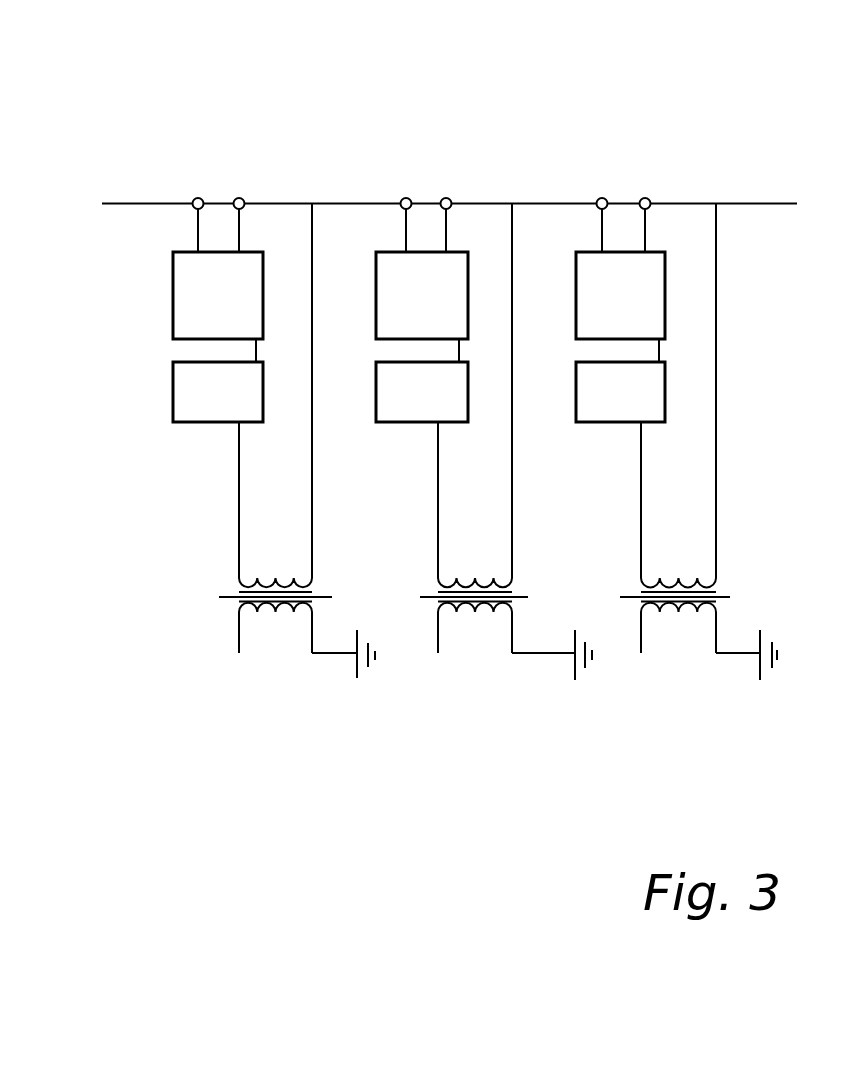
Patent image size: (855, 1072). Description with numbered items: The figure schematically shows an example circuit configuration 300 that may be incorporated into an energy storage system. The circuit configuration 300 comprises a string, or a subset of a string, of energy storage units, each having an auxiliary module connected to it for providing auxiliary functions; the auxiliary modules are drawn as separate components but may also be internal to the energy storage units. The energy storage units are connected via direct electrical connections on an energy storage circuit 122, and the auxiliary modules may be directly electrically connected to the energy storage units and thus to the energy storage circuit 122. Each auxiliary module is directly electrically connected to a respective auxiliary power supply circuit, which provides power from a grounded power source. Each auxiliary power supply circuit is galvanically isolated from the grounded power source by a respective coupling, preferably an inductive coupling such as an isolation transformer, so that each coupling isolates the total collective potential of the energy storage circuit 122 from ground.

The circuit configuration 300 is at (124, 84).
The energy storage circuit 122 is at (135, 203).